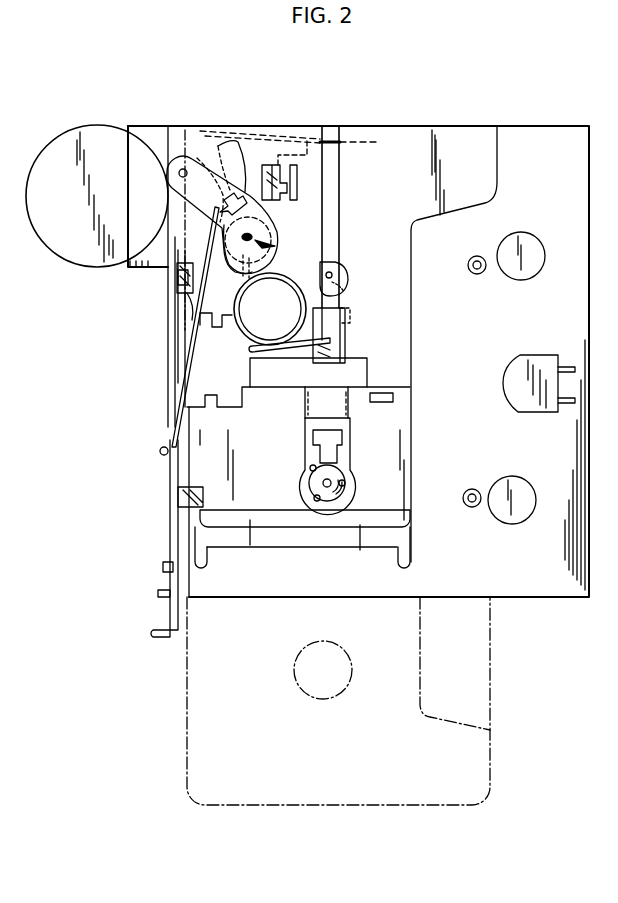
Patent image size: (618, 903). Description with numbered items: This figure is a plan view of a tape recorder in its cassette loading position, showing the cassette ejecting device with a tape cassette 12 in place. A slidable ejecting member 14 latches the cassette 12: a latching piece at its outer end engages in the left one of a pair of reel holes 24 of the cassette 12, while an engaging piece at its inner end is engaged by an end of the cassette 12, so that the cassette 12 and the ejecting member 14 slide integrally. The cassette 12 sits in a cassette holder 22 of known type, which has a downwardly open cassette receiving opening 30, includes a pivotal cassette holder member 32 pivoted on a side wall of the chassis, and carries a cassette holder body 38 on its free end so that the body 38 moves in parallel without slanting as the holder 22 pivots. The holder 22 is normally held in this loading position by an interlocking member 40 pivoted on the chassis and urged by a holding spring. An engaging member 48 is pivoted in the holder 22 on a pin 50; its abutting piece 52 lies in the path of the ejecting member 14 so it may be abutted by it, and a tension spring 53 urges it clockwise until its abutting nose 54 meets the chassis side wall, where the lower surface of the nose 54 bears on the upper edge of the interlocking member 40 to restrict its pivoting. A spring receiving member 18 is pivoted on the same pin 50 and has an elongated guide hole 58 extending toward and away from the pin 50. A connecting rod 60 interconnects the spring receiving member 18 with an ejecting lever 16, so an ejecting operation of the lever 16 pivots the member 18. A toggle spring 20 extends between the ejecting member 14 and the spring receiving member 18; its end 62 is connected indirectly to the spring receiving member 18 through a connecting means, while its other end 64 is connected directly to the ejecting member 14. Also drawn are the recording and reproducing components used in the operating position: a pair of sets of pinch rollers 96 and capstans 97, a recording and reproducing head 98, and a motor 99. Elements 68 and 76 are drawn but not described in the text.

The tape cassette 12 is at (352, 797).
The slidable ejecting member 14 is at (352, 344).
The ejecting lever 16 is at (163, 578).
The spring receiving member 18 is at (221, 166).
The toggle spring 20 is at (233, 337).
The cassette holder 22 is at (427, 118).
The reel hole 24 is at (338, 685).
The cassette receiving opening 30 is at (302, 540).
The pivotal cassette holder member 32 is at (388, 130).
The cassette holder body 38 is at (402, 462).
The interlocking member 40 is at (170, 327).
The engaging member 48 is at (297, 133).
The pin 50 is at (183, 168).
The abutting piece 52 is at (330, 138).
The tension spring 53 is at (268, 163).
The abutting nose 54 is at (177, 278).
The elongated guide hole 58 is at (270, 242).
The connecting rod 60 is at (187, 348).
The end of the toggle spring 62 is at (274, 254).
The other end of the toggle spring 64 is at (347, 352).
The pin 68 is at (262, 236).
The foot 76 is at (155, 628).
The pinch roller 96 is at (530, 272).
The capstan 97 is at (477, 277).
The recording and reproducing head 98 is at (513, 378).
The motor 99 is at (102, 262).